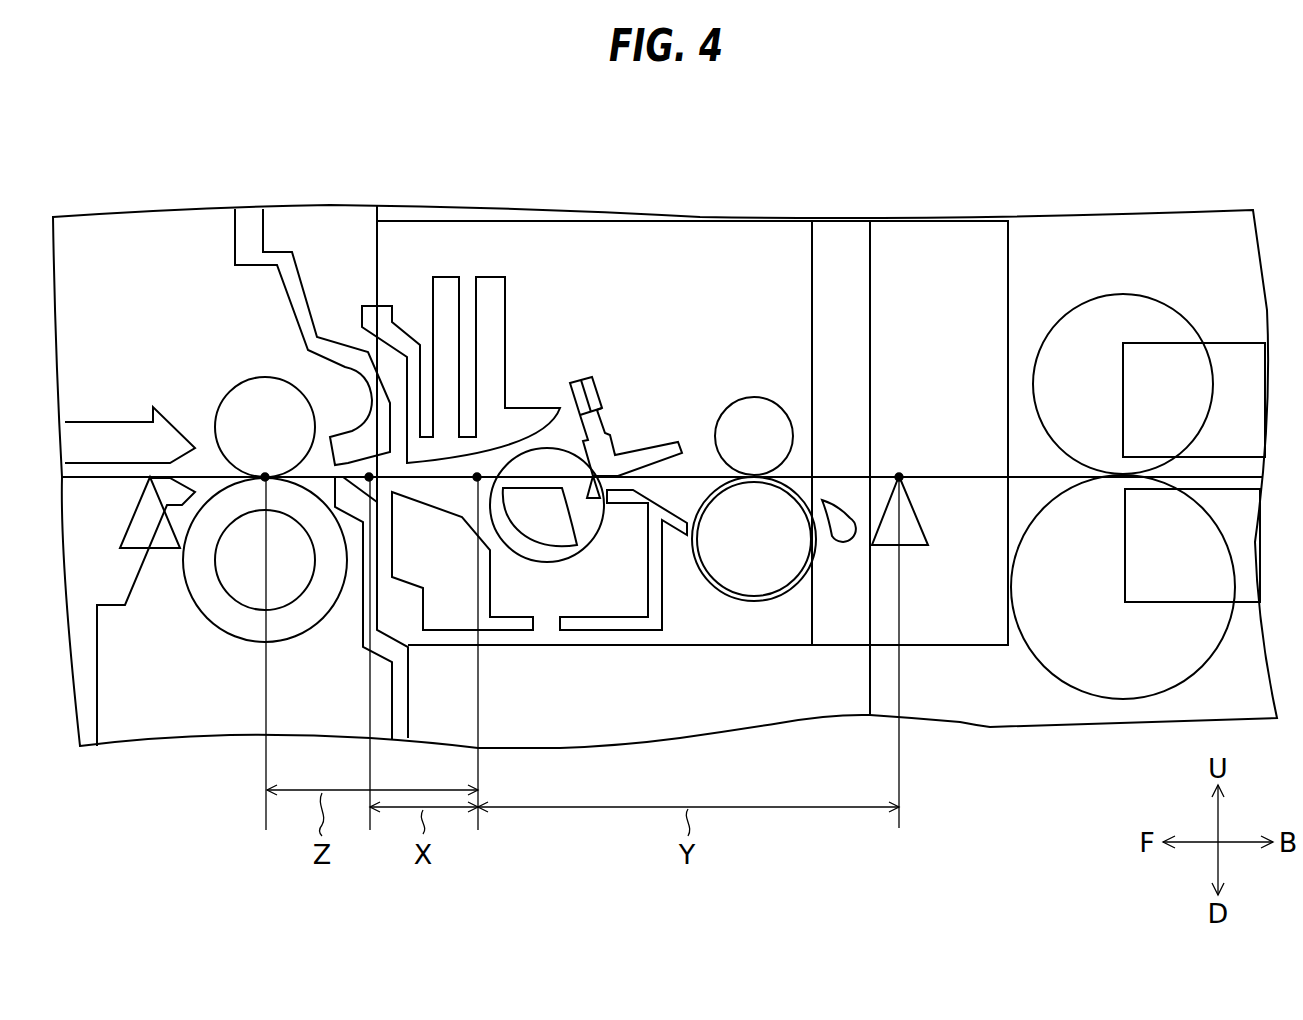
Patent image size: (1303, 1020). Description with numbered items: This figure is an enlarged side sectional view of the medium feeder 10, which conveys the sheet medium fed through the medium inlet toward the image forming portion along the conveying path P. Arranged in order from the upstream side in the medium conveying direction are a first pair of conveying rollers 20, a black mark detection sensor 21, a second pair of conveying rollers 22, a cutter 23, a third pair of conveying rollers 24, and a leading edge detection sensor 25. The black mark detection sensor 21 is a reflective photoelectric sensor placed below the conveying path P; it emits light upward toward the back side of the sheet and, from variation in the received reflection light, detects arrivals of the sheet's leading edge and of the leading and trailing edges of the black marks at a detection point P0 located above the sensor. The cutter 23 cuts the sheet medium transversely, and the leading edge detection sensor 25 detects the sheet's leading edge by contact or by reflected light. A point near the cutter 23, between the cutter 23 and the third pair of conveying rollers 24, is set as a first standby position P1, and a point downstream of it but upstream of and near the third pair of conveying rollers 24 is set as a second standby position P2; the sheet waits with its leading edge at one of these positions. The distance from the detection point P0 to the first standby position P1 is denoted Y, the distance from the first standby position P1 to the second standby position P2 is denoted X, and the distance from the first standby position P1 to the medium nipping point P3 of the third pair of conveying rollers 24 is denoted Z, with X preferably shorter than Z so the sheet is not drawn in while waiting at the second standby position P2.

The medium feeder 10 is at (83, 102).
The first pair of conveying rollers 20 is at (1122, 292).
The black mark detection sensor 21 is at (899, 476).
The second pair of conveying rollers 22 is at (754, 395).
The cutter 23 is at (612, 383).
The third pair of conveying rollers 24 is at (262, 375).
The leading edge detection sensor 25 is at (167, 507).
The conveying path P is at (968, 472).
The detection point P0 is at (899, 476).
The first standby position P1 is at (477, 477).
The second standby position P2 is at (369, 477).
The medium nipping point P3 is at (265, 477).